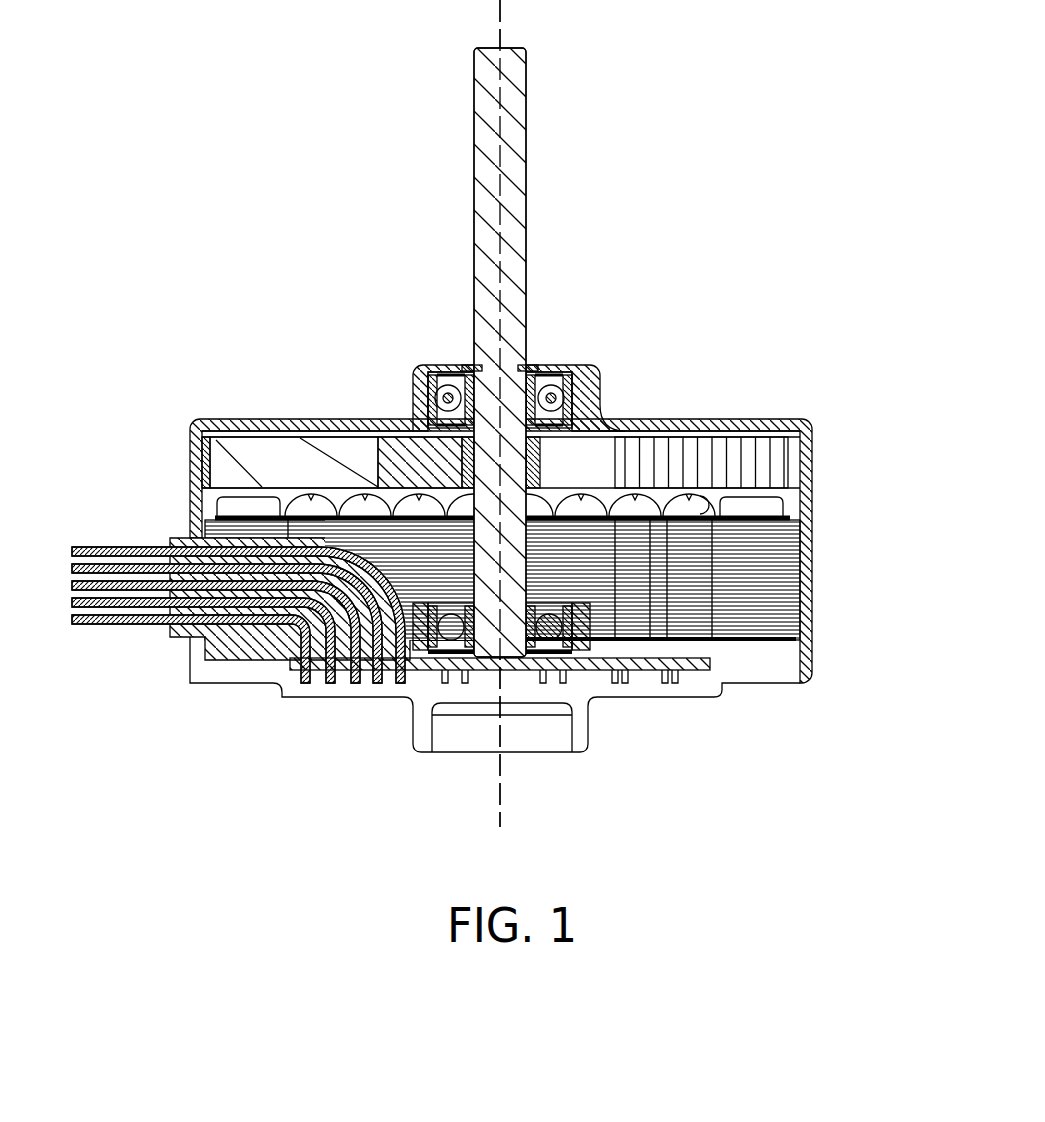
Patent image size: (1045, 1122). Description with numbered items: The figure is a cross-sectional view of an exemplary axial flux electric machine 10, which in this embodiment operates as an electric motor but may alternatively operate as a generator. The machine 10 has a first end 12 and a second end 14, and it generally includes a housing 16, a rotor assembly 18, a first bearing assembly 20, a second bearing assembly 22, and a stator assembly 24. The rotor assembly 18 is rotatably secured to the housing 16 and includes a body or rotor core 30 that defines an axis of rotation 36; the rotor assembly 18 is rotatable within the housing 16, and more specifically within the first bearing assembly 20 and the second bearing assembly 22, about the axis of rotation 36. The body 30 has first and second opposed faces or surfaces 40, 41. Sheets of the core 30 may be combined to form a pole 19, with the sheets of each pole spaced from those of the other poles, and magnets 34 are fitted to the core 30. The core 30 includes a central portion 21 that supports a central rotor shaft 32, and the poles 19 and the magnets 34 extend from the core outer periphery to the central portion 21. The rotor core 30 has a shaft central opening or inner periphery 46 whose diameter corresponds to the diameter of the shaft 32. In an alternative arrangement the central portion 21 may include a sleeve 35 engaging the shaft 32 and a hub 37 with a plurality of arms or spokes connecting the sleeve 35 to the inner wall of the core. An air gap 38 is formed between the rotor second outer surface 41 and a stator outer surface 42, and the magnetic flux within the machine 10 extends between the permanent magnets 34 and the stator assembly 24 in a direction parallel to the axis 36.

The axial flux electric machine 10 is at (718, 131).
The first end 12 is at (415, 254).
The second end 14 is at (746, 752).
The housing 16 is at (190, 452).
The rotor assembly 18 is at (764, 430).
The pole 19 is at (778, 440).
The first bearing assembly 20 is at (588, 378).
The central portion 21 is at (636, 262).
The second bearing assembly 22 is at (560, 652).
The stator assembly 24 is at (806, 588).
The rotor core 30 is at (352, 426).
The central rotor shaft 32 is at (528, 128).
The magnets 34 is at (226, 448).
The sleeve 35 is at (536, 438).
The axis of rotation 36 is at (496, 803).
The hub 37 is at (408, 432).
The air gap 38 is at (805, 494).
The first face 40 is at (276, 436).
The second face 41 is at (695, 497).
The stator outer surface 42 is at (232, 492).
The inner periphery 46 is at (532, 437).